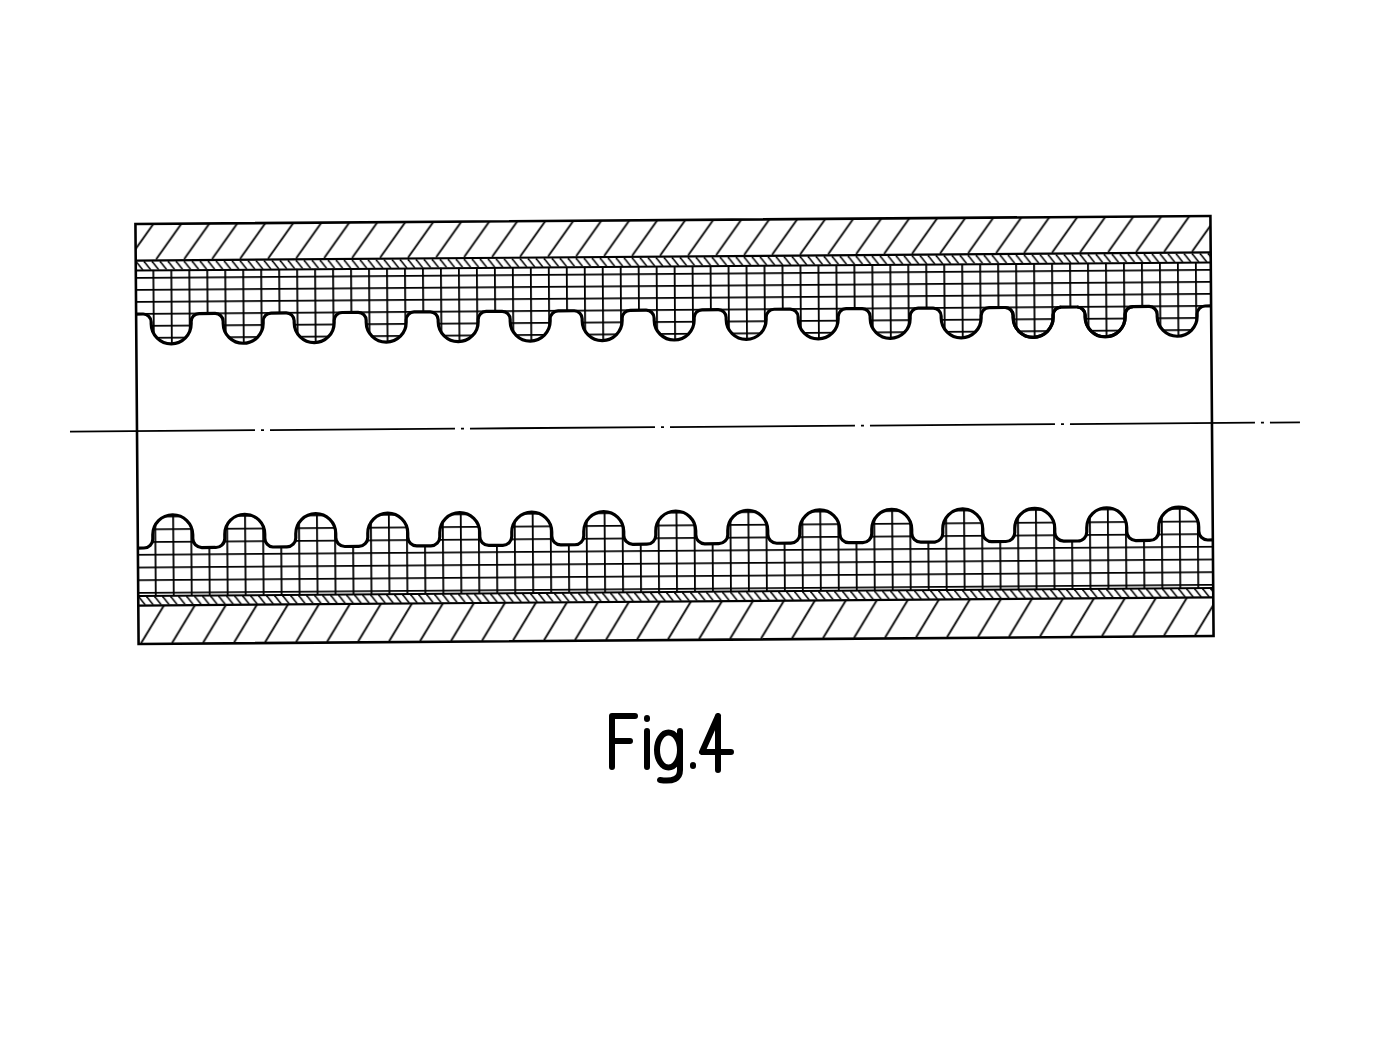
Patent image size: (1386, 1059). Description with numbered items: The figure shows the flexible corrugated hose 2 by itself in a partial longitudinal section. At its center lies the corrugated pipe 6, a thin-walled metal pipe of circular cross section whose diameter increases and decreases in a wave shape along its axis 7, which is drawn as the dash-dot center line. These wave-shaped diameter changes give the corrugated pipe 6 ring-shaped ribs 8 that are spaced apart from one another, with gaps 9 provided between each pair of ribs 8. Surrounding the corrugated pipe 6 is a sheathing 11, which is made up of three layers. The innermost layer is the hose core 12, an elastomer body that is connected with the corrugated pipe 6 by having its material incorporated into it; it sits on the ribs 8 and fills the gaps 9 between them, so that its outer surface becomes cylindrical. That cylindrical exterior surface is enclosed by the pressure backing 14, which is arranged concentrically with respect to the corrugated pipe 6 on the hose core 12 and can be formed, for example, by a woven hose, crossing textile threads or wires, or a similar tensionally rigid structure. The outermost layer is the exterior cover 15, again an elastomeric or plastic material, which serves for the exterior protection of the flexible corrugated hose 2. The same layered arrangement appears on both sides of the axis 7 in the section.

The flexible corrugated hose 2 is at (1079, 178).
The corrugated pipe 6 is at (1178, 340).
The axis 7 is at (1265, 425).
The ring-shaped ribs 8 is at (1032, 342).
The gaps 9 is at (1103, 342).
The sheathing 11 is at (1228, 305).
The hose core 12 is at (143, 288).
The pressure backing 14 is at (1207, 590).
The exterior cover 15 is at (1087, 628).